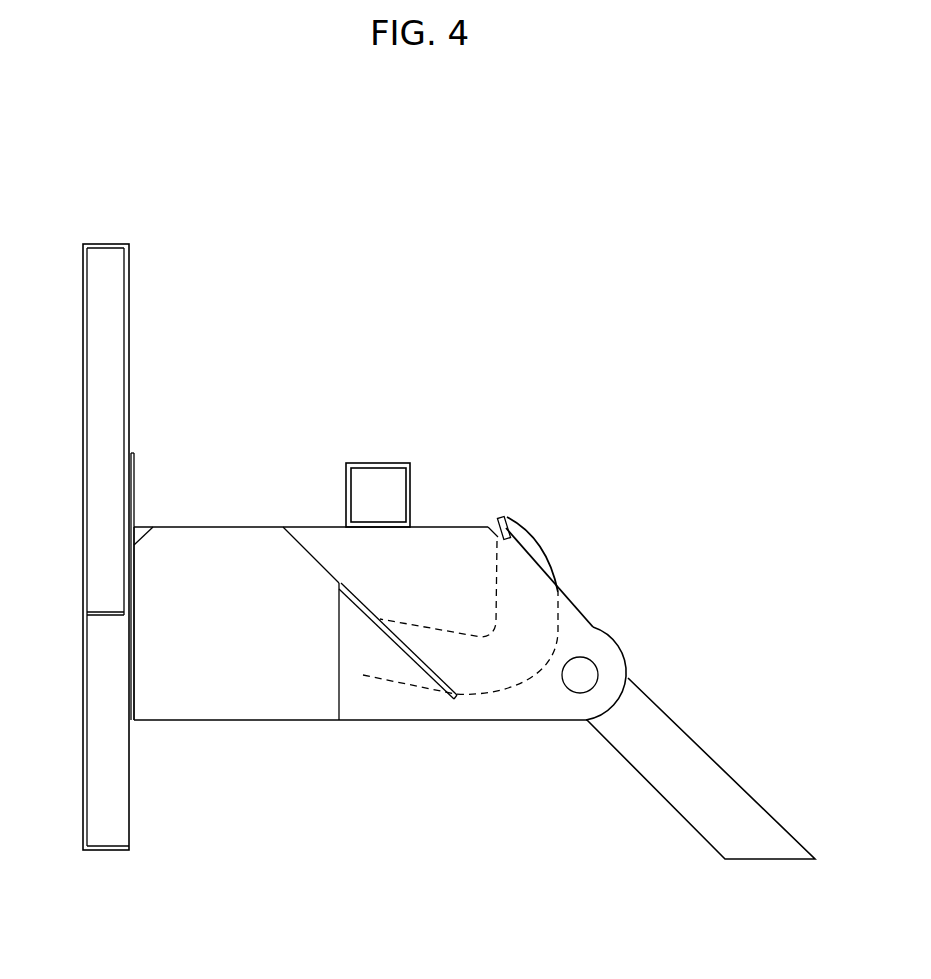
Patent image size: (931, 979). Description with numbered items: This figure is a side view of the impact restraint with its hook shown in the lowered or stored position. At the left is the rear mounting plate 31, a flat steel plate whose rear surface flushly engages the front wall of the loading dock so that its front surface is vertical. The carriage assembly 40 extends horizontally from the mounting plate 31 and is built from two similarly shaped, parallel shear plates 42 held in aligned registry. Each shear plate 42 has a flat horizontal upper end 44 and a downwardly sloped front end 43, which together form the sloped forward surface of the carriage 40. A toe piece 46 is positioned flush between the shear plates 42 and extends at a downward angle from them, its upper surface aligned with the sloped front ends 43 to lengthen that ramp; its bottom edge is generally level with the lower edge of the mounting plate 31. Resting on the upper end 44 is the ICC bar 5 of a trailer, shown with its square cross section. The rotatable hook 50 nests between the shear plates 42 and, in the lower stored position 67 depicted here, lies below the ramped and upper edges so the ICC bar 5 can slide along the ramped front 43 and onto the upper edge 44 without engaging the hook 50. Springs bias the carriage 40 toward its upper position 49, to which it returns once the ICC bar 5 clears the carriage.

The mounting plate 31 is at (83, 665).
The carriage assembly 40 is at (186, 522).
The shear plates 42 is at (252, 644).
The flat horizontal upper ends 44 is at (222, 527).
The ICC bar 5 is at (378, 464).
The upper position 49 is at (446, 526).
The hook 50 is at (547, 550).
The lower stored position 67 is at (559, 627).
The downwardly sloped front ends 43 is at (617, 642).
The toe piece 46 is at (748, 812).